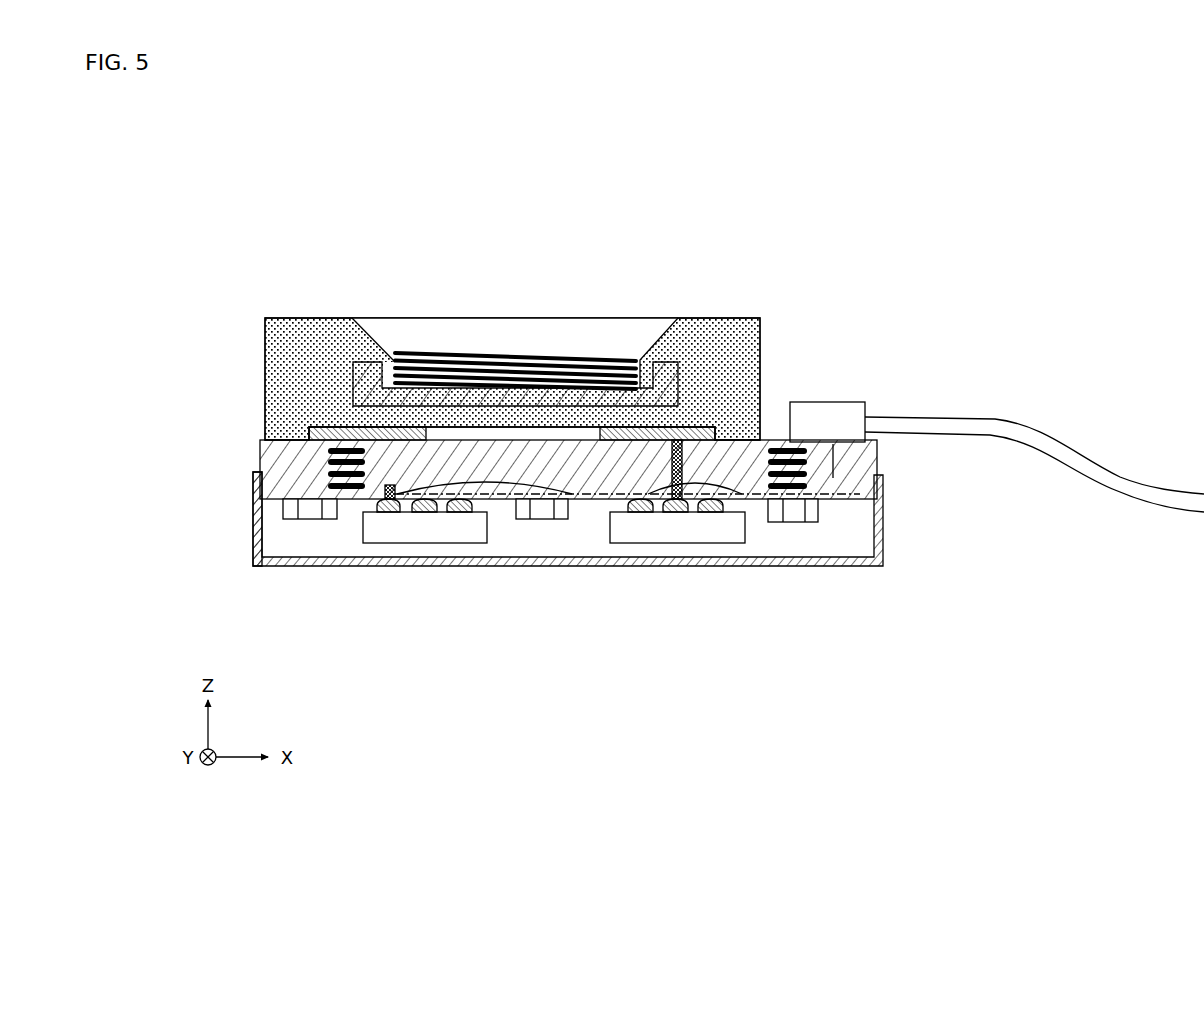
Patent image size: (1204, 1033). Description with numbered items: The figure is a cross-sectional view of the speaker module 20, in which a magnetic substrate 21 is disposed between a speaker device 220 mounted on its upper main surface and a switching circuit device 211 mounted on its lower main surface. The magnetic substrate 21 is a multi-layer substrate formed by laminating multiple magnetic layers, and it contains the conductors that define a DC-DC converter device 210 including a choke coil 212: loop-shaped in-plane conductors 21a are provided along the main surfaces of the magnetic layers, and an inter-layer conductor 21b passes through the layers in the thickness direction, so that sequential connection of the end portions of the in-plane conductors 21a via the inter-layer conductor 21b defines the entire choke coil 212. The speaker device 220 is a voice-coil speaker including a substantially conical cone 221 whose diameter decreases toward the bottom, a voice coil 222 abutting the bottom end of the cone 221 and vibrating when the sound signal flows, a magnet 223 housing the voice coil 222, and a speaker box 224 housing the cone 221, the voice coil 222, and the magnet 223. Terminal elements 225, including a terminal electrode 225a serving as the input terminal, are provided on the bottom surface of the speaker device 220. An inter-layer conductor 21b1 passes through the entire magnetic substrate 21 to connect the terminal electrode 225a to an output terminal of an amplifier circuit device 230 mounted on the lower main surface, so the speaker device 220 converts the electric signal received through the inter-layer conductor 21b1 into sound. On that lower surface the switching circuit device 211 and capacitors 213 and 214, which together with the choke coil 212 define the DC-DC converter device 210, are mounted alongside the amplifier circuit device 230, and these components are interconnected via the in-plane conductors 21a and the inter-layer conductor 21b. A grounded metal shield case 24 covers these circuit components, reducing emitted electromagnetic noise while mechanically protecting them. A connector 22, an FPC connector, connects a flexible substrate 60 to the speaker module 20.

The speaker module 20 is at (939, 248).
The speaker device 220 is at (770, 304).
The cone 221 is at (423, 332).
The voice coil 222 is at (510, 358).
The magnet 223 is at (666, 365).
The speaker box 224 is at (750, 369).
The terminal elements 225 is at (310, 430).
The terminal electrode 225a is at (733, 420).
The connector 22 is at (839, 413).
The flexible substrate 60 is at (950, 422).
The magnetic substrate 21 is at (868, 457).
The in-plane conductors 21a is at (808, 490).
The inter-layer conductor 21b is at (585, 499).
The inter-layer conductor 21b1 is at (743, 500).
The shield case 24 is at (880, 560).
The DC-DC converter device 210 is at (540, 606).
The switching circuit device 211 is at (418, 545).
The choke coil 212 is at (262, 542).
The capacitor 213 is at (308, 520).
The capacitor 214 is at (540, 522).
The amplifier circuit device 230 is at (660, 545).